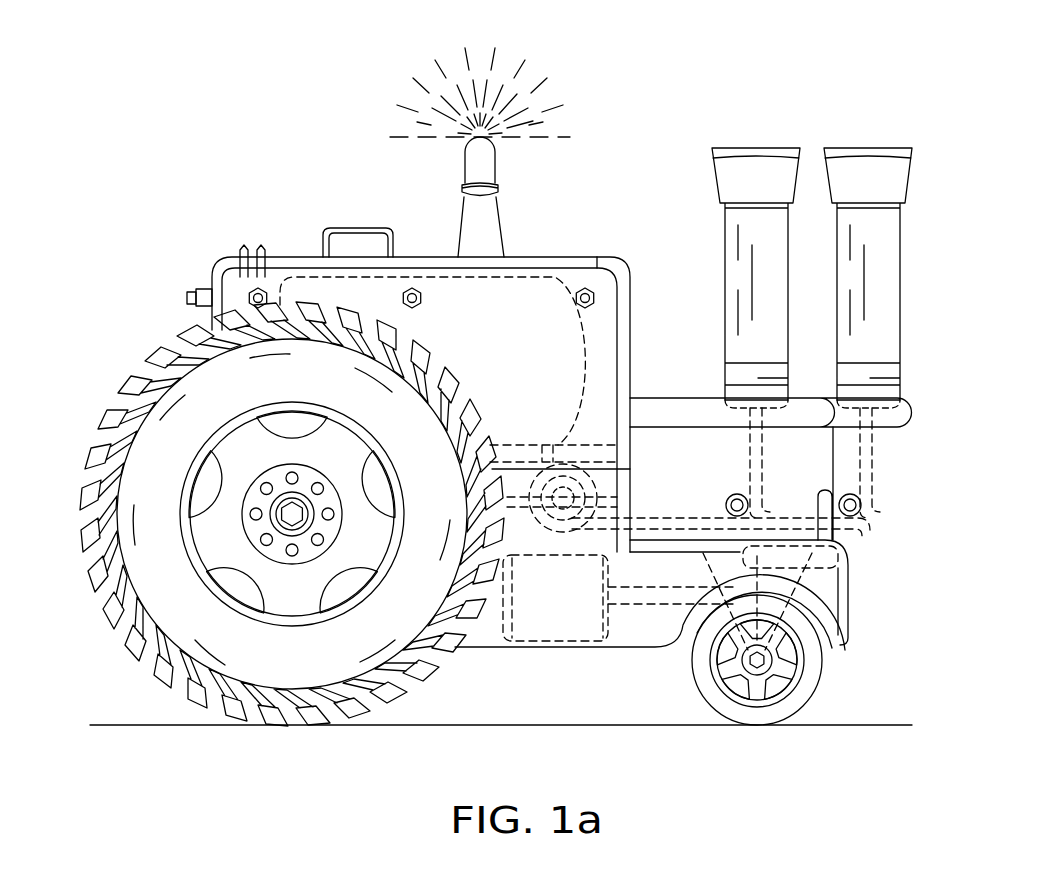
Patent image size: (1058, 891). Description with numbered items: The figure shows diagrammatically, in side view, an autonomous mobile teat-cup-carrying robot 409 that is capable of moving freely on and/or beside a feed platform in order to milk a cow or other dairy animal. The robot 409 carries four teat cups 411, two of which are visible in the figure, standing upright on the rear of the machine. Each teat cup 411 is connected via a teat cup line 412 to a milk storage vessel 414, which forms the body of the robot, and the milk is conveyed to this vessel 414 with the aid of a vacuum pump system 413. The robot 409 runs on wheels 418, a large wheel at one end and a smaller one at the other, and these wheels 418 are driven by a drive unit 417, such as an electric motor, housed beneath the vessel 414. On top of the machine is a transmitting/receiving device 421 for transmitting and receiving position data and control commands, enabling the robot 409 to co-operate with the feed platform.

The autonomous mobile teat-cup-carrying robot 409 is at (183, 229).
The teat cup 411 is at (865, 153).
The teat cup line 412 is at (867, 470).
The vacuum pump system 413 is at (588, 482).
The milk storage vessel 414 is at (537, 297).
The drive unit 417 is at (588, 593).
The wheels 418 is at (810, 677).
The transmitting/receiving device 421 is at (480, 148).